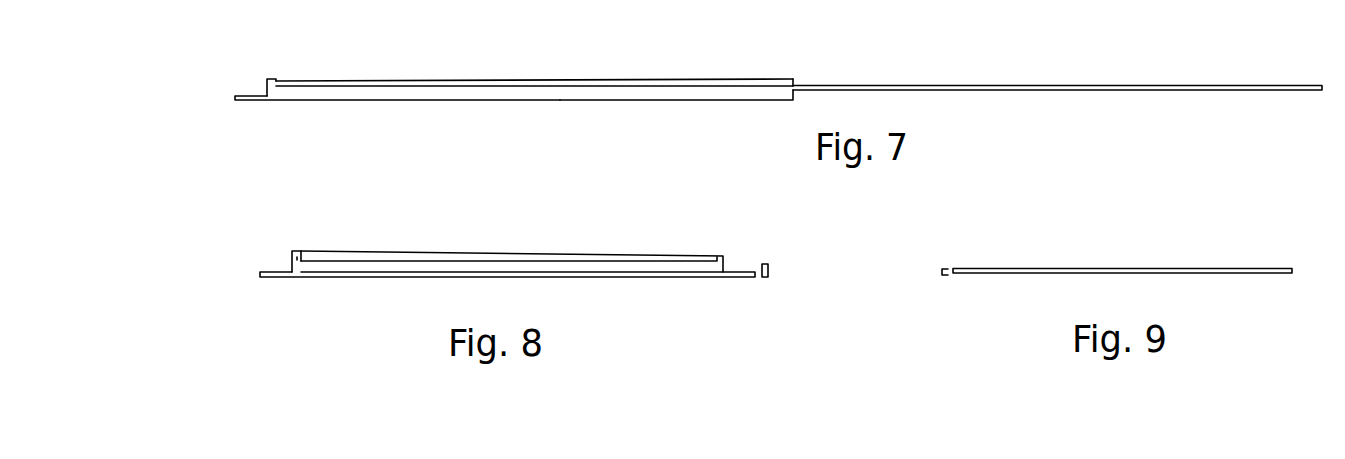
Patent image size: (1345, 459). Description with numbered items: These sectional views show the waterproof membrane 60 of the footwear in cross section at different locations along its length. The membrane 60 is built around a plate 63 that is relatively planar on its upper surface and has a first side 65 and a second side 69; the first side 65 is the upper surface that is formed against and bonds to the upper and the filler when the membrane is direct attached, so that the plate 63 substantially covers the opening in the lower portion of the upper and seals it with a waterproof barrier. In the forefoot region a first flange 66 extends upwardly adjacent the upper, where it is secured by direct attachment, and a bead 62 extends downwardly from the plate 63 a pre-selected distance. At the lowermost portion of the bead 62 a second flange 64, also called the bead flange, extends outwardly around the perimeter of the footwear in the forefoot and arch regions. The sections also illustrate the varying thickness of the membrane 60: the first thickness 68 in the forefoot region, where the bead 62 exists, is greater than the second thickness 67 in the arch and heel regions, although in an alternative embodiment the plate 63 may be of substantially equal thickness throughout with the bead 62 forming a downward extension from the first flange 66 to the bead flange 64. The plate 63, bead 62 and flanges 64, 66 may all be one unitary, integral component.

In FIG. 7, the membrane 60 is at (510, 48).
In FIG. 7, the bead 62 is at (253, 70).
In FIG. 7, the plate 63 is at (930, 85).
In FIG. 8, the plate 63 is at (515, 268).
In FIG. 9, the plate 63 is at (1067, 268).
In FIG. 7, the second flange 64 is at (246, 98).
In FIG. 8, the second flange 64 is at (277, 277).
In FIG. 7, the first side 65 is at (633, 54).
In FIG. 7, the first flange 66 is at (787, 72).
In FIG. 8, the first flange 66 is at (323, 251).
In FIG. 9, the second thickness 67 is at (941, 272).
In FIG. 8, the first thickness 68 is at (768, 270).
In FIG. 7, the second side 69 is at (690, 108).